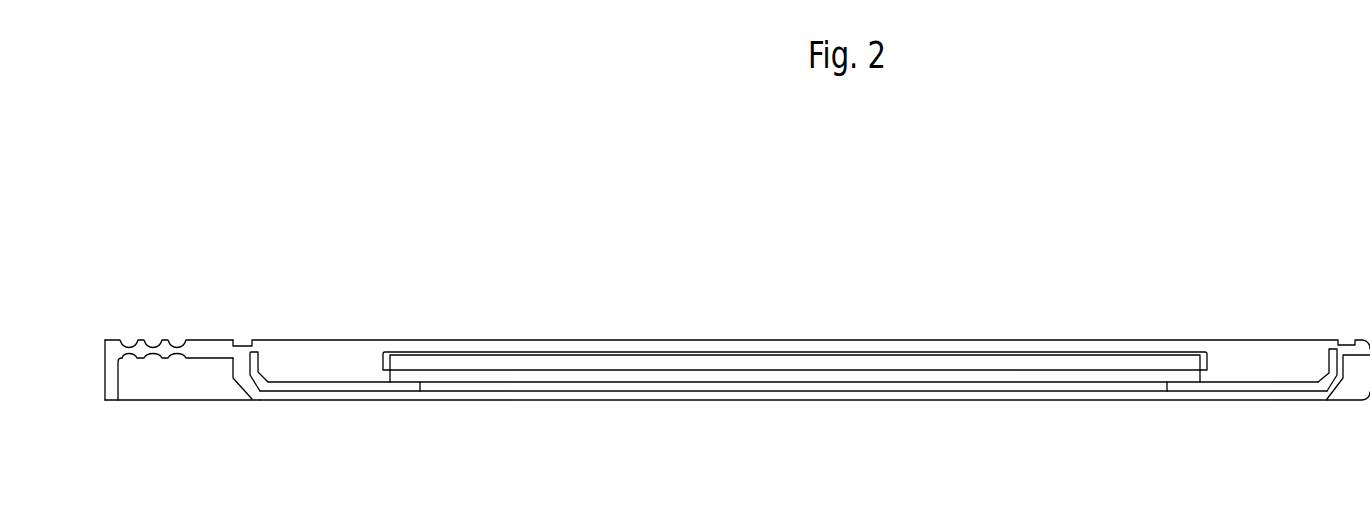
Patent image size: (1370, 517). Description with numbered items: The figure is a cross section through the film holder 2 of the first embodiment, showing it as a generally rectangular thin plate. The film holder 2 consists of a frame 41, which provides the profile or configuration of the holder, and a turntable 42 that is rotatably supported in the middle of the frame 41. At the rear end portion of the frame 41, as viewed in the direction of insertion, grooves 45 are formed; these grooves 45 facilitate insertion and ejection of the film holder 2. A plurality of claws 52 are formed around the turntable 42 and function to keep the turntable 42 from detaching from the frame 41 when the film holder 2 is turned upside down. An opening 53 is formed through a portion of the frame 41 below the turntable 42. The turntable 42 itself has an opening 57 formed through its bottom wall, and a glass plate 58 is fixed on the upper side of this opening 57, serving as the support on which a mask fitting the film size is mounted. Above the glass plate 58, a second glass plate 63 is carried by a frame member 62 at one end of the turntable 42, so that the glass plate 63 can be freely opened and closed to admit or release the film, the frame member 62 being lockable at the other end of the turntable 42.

The film holder 2 is at (1298, 324).
The frame 41 is at (105, 370).
The turntable 42 is at (291, 381).
The grooves 45 is at (164, 340).
The claws 52 is at (251, 351).
The opening 53 is at (322, 392).
The opening 57 is at (420, 386).
The glass plate 58 is at (1060, 383).
The frame member 62 is at (1192, 351).
The glass plate 63 is at (1070, 362).